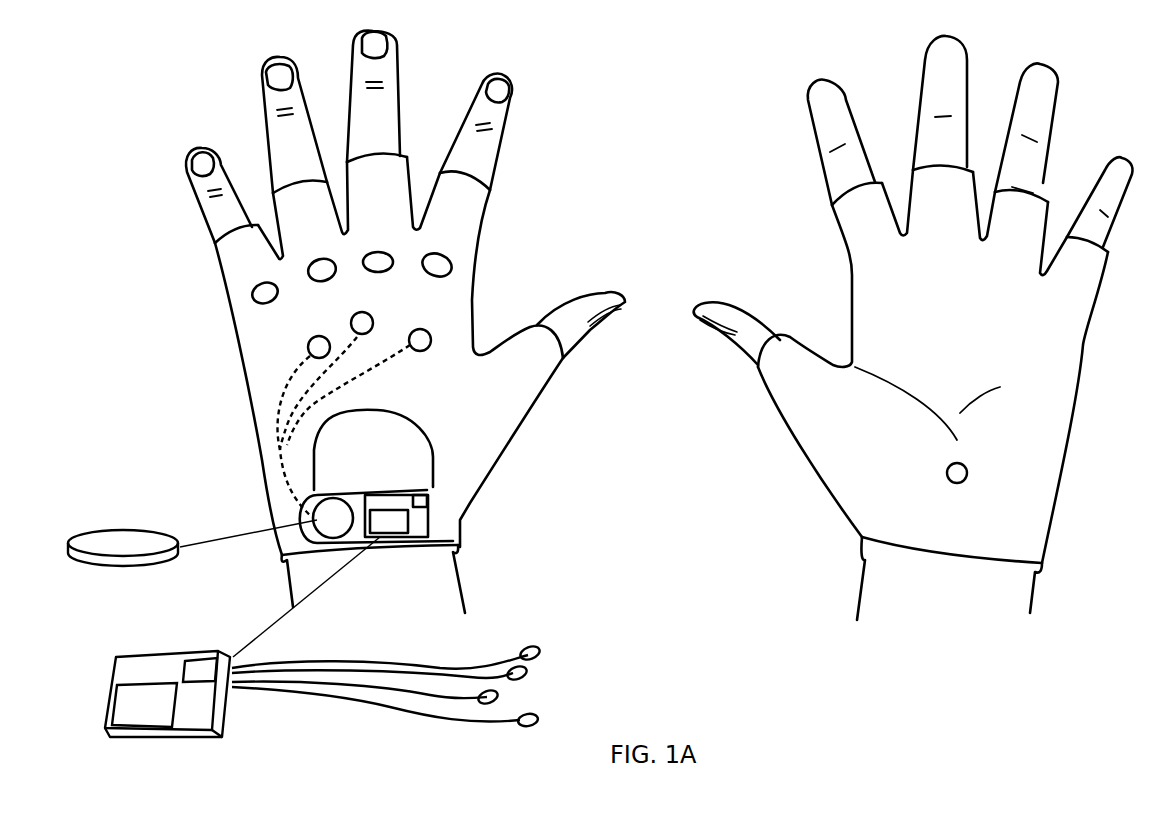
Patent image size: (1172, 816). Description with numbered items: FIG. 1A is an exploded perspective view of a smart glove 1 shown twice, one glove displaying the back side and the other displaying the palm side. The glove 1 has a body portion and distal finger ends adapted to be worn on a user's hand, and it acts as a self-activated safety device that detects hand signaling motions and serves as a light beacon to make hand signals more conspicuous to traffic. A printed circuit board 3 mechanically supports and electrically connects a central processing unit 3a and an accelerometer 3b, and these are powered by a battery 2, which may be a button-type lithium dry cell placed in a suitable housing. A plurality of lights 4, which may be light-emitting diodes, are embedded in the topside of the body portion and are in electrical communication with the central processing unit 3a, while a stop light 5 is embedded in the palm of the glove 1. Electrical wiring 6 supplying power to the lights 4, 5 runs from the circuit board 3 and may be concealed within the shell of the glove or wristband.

The smart glove 1 is at (233, 267).
The battery 2 is at (132, 532).
The printed circuit board 3 is at (211, 637).
The central processing unit 3a is at (122, 702).
The accelerometer 3b is at (203, 663).
The lights 4 is at (308, 346).
The stop light 5 is at (963, 470).
The wiring 6 is at (293, 418).